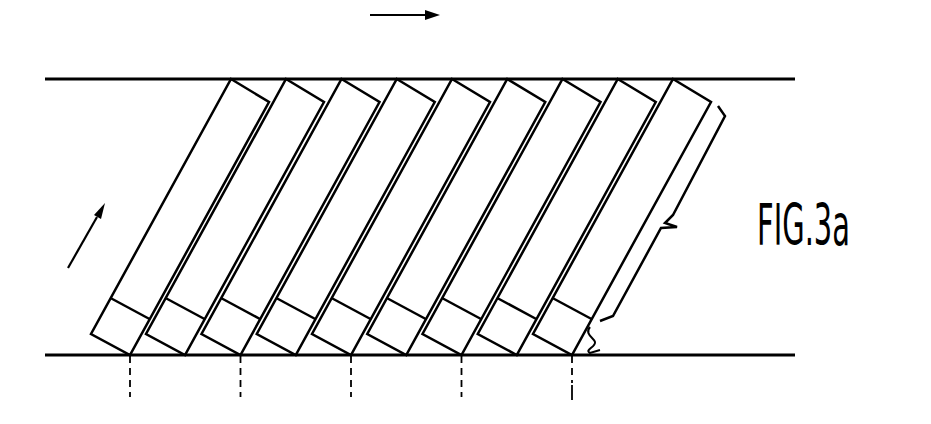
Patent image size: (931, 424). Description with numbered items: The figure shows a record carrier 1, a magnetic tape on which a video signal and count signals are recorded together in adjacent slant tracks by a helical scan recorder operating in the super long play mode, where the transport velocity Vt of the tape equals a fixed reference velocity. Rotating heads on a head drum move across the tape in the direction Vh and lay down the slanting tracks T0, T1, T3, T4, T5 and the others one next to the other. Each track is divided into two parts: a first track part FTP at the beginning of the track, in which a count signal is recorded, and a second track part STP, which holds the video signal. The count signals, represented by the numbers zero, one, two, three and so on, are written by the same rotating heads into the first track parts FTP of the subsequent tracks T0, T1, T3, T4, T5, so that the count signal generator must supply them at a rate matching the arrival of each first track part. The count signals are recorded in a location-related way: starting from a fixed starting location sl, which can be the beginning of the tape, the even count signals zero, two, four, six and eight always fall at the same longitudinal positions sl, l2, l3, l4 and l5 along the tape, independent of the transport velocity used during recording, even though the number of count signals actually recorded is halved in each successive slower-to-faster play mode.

The record carrier 1 is at (763, 79).
The track T0 is at (683, 108).
The track T1 is at (633, 108).
The track T3 is at (576, 108).
The track T4 is at (523, 108).
The track T5 is at (463, 108).
The second track part STP is at (662, 213).
The first track part FTP is at (599, 352).
The transport velocity of the tape Vt is at (417, 16).
The direction of movement of the heads Vh is at (80, 254).
The location l2 is at (461, 375).
The location l3 is at (350, 375).
The location l4 is at (240, 375).
The location l5 is at (130, 375).
The starting location sl is at (571, 388).